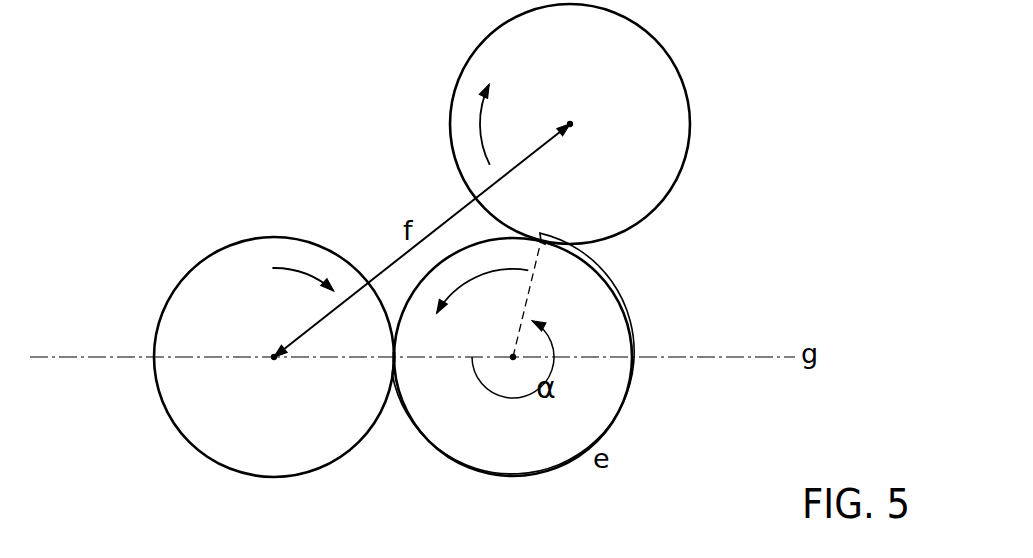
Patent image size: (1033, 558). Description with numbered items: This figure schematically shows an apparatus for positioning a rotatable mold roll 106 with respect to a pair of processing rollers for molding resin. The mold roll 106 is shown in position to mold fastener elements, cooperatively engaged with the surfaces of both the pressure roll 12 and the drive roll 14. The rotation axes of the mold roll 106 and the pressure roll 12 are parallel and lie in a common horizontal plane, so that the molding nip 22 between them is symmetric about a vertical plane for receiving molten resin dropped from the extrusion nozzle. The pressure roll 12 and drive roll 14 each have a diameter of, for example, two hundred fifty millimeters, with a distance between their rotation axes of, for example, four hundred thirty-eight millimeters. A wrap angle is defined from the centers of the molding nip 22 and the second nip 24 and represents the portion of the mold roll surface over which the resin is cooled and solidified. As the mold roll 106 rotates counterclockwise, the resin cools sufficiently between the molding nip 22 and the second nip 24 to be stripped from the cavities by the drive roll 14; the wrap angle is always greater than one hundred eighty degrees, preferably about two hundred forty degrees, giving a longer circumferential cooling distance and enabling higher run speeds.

The pressure roll 12 is at (307, 462).
The drive roll 14 is at (648, 80).
The molding nip 22 is at (388, 410).
The second nip 24 is at (588, 248).
The mold roll 106 is at (602, 398).